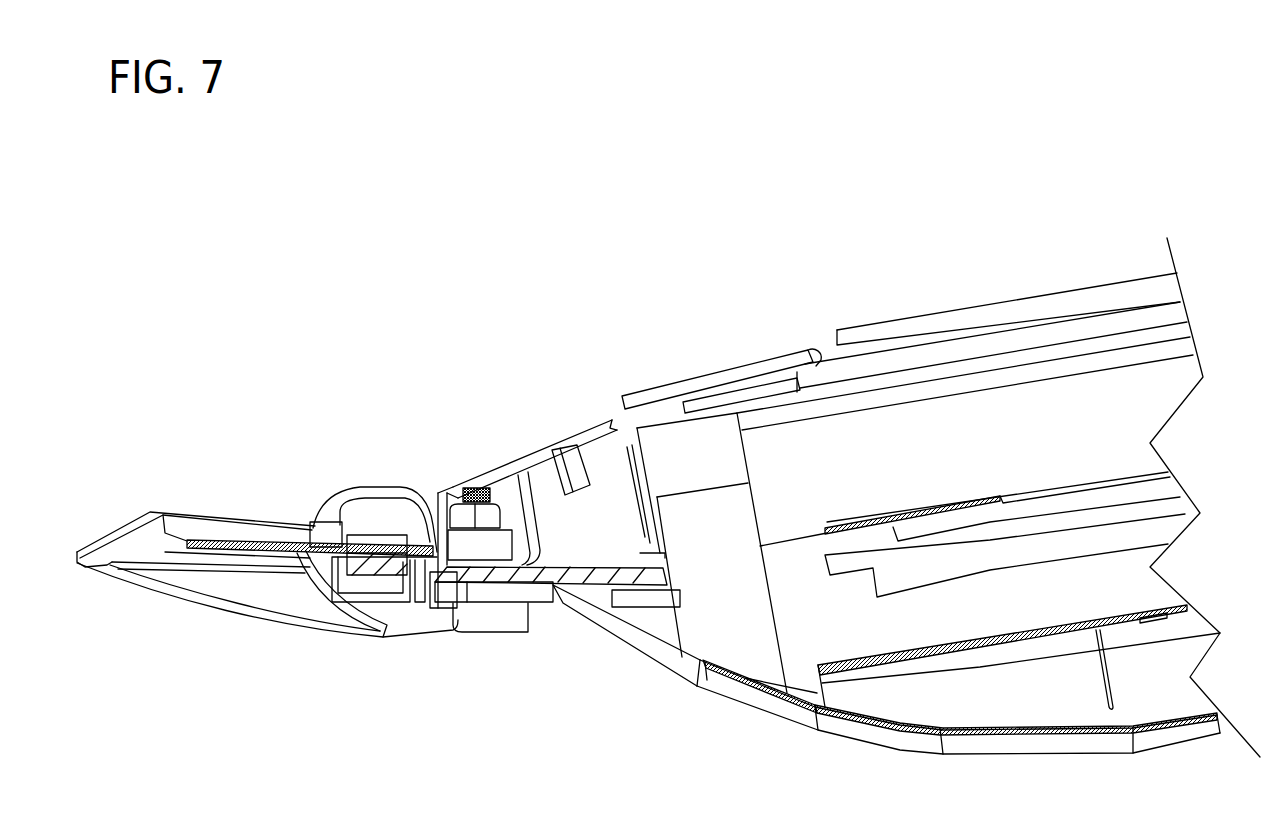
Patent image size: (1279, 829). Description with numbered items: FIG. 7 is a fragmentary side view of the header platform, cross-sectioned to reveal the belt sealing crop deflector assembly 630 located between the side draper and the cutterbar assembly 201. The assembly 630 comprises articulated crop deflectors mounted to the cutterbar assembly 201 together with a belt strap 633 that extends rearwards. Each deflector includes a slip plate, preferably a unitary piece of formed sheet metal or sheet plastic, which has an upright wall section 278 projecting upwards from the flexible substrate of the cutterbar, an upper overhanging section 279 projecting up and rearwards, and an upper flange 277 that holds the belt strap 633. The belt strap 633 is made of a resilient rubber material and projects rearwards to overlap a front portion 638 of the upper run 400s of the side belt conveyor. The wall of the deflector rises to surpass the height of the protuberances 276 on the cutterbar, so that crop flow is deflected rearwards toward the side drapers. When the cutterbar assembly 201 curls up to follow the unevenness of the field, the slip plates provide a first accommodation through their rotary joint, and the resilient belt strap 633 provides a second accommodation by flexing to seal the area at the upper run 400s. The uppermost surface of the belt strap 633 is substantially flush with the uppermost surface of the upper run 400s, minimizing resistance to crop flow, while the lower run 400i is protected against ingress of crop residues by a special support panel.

The cutterbar assembly 201 is at (258, 466).
The upright wall section 278 is at (435, 535).
The upper overhanging section 279 is at (536, 453).
The protuberances 276 is at (485, 519).
The upper flange 277 is at (675, 400).
The belt sealing crop deflector assembly 630 is at (585, 342).
The belt strap 633 is at (721, 376).
The front portion 638 is at (806, 355).
The upper run 400s is at (960, 322).
The lower run 400i is at (1120, 513).